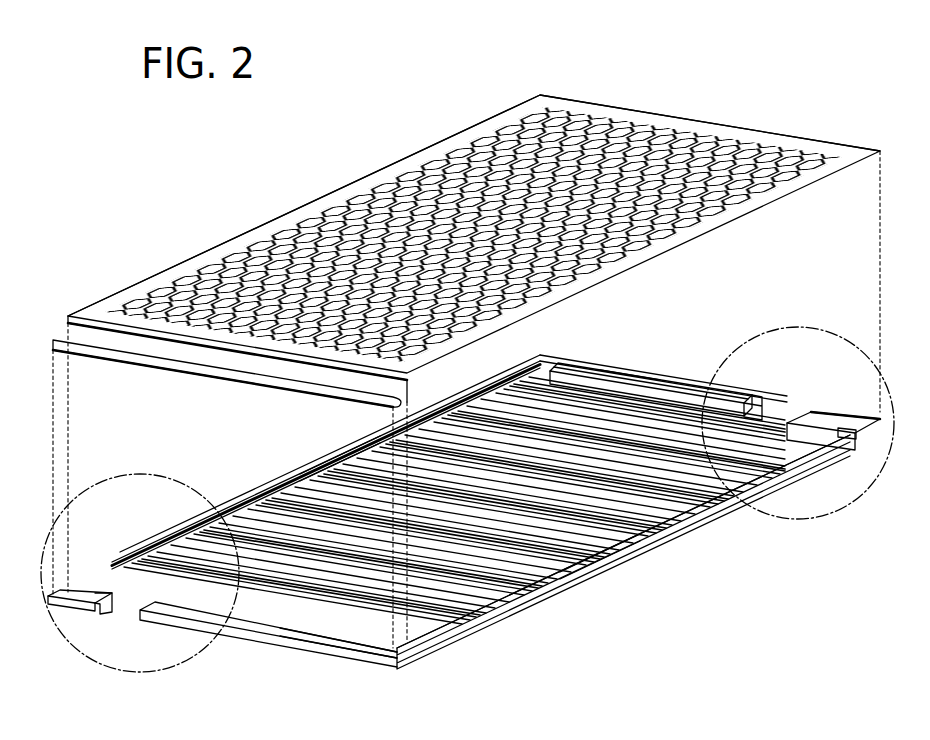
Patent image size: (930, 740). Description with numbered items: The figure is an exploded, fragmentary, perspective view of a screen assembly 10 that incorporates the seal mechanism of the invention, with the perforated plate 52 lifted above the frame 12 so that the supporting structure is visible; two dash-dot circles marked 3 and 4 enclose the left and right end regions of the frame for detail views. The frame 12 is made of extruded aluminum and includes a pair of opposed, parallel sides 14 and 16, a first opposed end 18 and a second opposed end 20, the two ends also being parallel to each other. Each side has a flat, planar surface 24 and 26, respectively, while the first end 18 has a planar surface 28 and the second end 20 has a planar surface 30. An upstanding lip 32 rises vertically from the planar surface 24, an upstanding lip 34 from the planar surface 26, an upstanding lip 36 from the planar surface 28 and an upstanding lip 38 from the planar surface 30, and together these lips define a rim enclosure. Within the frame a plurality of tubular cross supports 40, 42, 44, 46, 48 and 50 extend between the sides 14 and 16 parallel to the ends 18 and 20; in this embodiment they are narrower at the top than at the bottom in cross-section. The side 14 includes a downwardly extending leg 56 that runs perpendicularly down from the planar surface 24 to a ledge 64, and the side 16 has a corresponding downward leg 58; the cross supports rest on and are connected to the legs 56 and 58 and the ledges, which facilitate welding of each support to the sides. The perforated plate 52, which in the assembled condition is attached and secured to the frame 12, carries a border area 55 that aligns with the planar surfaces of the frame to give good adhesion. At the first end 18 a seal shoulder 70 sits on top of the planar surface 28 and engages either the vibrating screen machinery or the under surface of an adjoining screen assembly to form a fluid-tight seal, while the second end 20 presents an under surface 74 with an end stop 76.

The screen assembly 10 is at (622, 86).
The frame 12 is at (472, 499).
The side 14 is at (478, 554).
The side 16 is at (478, 554).
The first opposed end 18 is at (478, 554).
The second opposed end 20 is at (703, 350).
The planar surface 24 is at (326, 453).
The planar surface 26 is at (530, 582).
The planar surface 28 is at (320, 634).
The planar surface 30 is at (697, 368).
The upstanding lip 32 is at (340, 456).
The upstanding lip 34 is at (600, 562).
The upstanding lip 36 is at (262, 623).
The upstanding lip 38 is at (645, 370).
The tubular cross support 40 is at (180, 565).
The tubular cross support 42 is at (240, 530).
The tubular cross support 44 is at (312, 500).
The tubular cross support 46 is at (652, 516).
The tubular cross support 48 is at (690, 482).
The tubular cross support 50 is at (745, 452).
The perforated plate 52 is at (702, 125).
The border area 55 is at (383, 170).
The downwardly extending leg 56 is at (107, 580).
The downward leg 58 is at (623, 552).
The ledge 64 is at (125, 606).
The seal shoulder 70 is at (92, 357).
The under surface 74 is at (752, 408).
The end stop 76 is at (752, 412).
The detail circle 3 is at (150, 474).
The detail circle 4 is at (800, 327).